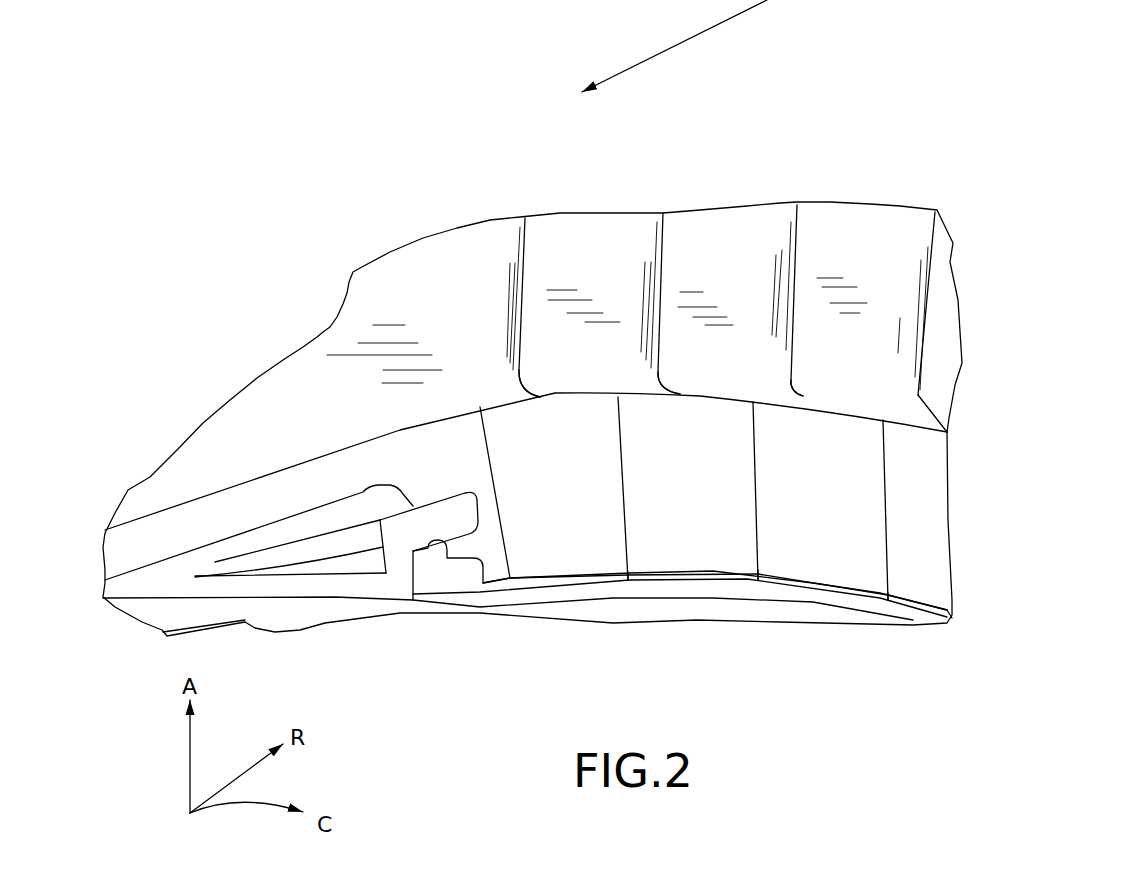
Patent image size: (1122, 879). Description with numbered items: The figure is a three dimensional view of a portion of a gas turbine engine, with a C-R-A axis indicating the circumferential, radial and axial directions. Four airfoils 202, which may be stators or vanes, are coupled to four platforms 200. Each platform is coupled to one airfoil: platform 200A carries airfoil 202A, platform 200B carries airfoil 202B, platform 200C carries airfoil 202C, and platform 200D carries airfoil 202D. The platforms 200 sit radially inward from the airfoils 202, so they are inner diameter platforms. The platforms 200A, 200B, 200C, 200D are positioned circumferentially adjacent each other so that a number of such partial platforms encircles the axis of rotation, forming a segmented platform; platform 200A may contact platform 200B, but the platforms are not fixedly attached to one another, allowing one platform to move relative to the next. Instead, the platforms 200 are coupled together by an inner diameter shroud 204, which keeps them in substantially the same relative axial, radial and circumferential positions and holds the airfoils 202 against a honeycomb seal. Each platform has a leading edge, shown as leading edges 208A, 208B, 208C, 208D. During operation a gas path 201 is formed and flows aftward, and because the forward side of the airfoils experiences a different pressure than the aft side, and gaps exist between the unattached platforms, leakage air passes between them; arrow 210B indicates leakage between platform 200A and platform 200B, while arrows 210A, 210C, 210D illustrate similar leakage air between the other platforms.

The platforms 200 is at (962, 538).
The platform 200A is at (577, 568).
The platform 200B is at (690, 594).
The platform 200C is at (817, 601).
The platform 200D is at (915, 628).
The gas path 201 is at (682, 40).
The airfoils 202 is at (982, 314).
The airfoil 202A is at (496, 240).
The airfoil 202B is at (606, 232).
The airfoil 202C is at (746, 223).
The airfoil 202D is at (893, 218).
The inner diameter shroud 204 is at (433, 528).
The leading edge 208A is at (600, 542).
The leading edge 208B is at (733, 542).
The leading edge 208C is at (857, 560).
The leading edge 208D is at (923, 563).
The arrow 210A is at (556, 391).
The arrow 210B is at (710, 368).
The arrow 210C is at (830, 364).
The arrow 210D is at (960, 374).